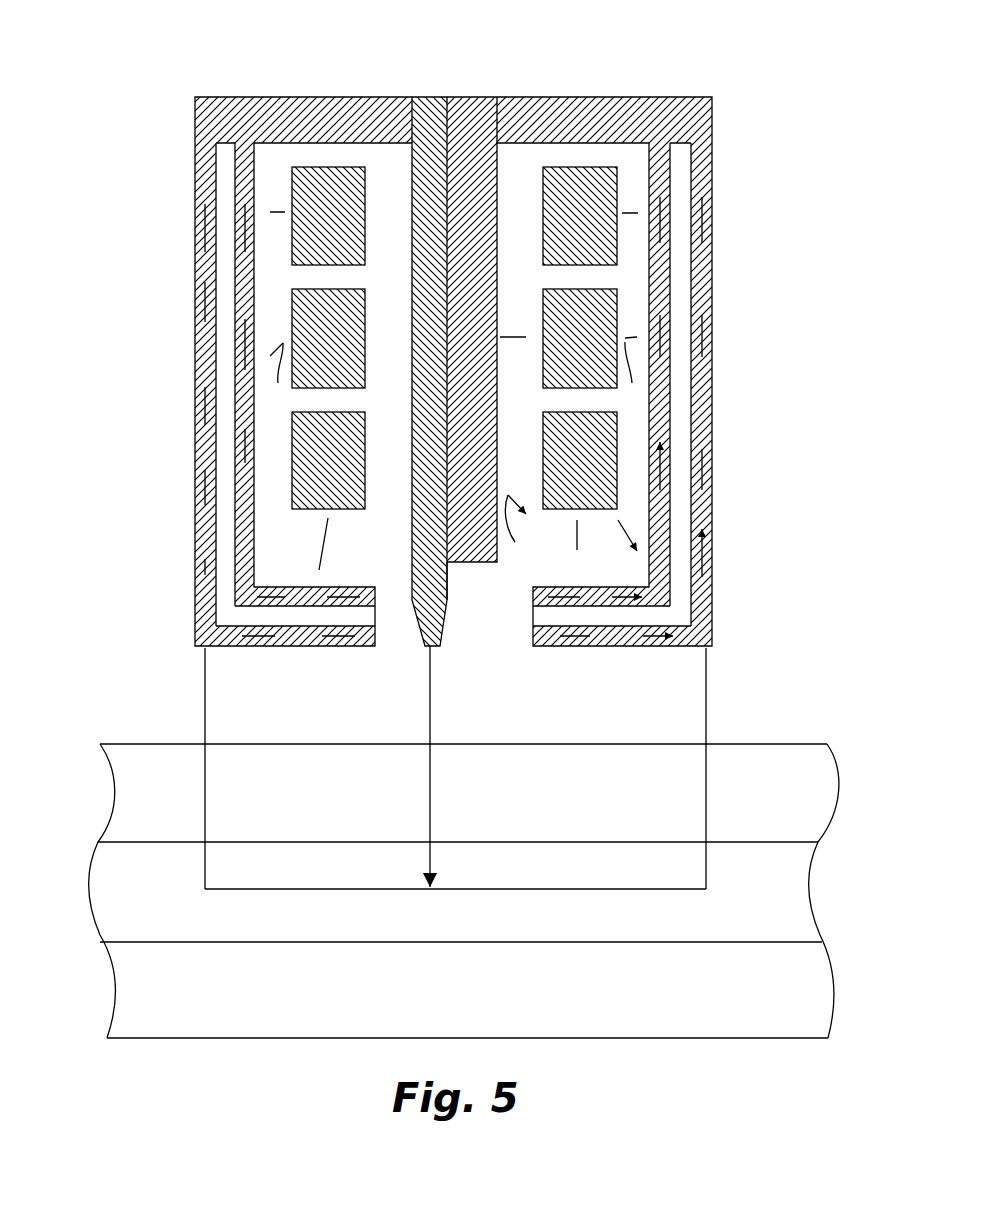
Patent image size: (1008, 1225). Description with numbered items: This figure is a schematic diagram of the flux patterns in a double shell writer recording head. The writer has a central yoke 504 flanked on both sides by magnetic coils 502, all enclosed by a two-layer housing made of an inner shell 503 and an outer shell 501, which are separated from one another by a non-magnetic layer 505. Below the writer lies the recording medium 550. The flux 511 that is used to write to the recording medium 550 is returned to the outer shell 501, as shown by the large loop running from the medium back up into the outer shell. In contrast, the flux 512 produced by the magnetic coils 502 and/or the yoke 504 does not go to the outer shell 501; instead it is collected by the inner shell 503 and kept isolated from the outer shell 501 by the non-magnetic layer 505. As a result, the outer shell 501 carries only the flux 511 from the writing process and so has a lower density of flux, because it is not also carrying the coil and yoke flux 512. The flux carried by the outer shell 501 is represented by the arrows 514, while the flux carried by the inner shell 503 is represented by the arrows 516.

The outer shell 501 is at (208, 638).
The magnetic coils 502 is at (365, 218).
The inner shell 503 is at (245, 597).
The yoke 504 is at (465, 140).
The non-magnetic layer 505 is at (235, 616).
The flux 511 is at (205, 703).
The flux 512 is at (457, 391).
The arrows 514 is at (203, 236).
The arrows 516 is at (237, 222).
The recording medium 550 is at (112, 830).